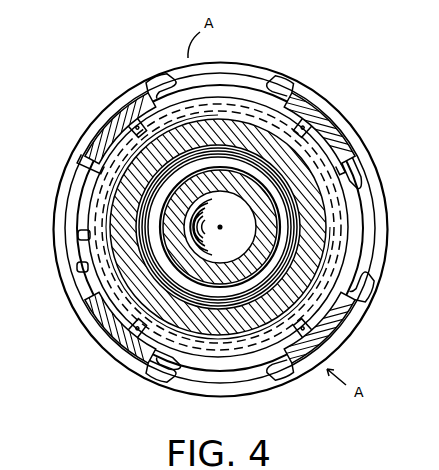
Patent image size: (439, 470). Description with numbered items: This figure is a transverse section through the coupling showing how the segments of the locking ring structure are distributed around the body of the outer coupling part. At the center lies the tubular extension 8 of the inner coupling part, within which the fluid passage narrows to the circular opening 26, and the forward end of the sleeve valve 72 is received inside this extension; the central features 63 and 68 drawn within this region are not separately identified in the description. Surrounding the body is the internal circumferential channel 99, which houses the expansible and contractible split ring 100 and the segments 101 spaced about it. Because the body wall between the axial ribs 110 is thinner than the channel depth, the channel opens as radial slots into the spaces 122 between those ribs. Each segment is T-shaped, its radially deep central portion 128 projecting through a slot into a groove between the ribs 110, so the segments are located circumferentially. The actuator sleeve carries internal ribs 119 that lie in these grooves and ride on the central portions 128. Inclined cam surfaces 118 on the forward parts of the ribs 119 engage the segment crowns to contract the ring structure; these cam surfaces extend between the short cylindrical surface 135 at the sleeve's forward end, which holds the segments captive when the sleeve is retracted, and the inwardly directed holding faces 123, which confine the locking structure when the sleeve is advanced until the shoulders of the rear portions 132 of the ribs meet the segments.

The tubular extension 8 is at (366, 251).
The circular opening 26 is at (280, 245).
The bore 63 is at (205, 227).
The axis 68 is at (226, 252).
The sleeve valve 72 is at (209, 156).
The channel 99 is at (331, 345).
The split ring 100 is at (99, 194).
The segments 101 is at (261, 88).
The axial ribs 110 is at (333, 114).
The cam surfaces 118 is at (242, 80).
The sleeve ribs 119 is at (132, 92).
The spaces 122 is at (280, 92).
The holding faces 123 is at (78, 246).
The central deep portion 128 is at (360, 197).
The rear portions 132 is at (90, 219).
The cylindrical surface 135 is at (78, 277).